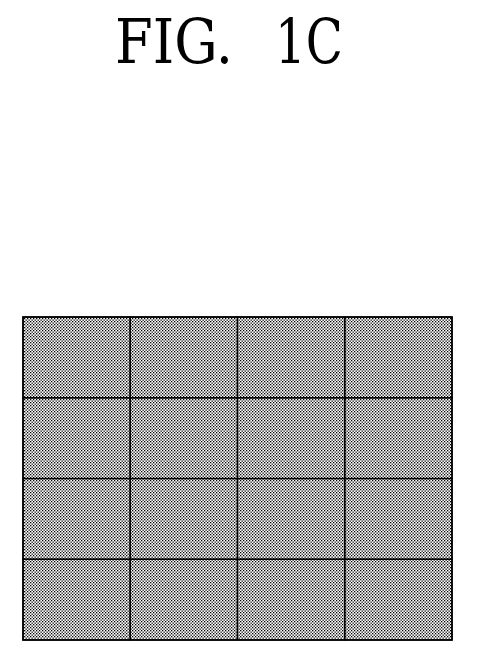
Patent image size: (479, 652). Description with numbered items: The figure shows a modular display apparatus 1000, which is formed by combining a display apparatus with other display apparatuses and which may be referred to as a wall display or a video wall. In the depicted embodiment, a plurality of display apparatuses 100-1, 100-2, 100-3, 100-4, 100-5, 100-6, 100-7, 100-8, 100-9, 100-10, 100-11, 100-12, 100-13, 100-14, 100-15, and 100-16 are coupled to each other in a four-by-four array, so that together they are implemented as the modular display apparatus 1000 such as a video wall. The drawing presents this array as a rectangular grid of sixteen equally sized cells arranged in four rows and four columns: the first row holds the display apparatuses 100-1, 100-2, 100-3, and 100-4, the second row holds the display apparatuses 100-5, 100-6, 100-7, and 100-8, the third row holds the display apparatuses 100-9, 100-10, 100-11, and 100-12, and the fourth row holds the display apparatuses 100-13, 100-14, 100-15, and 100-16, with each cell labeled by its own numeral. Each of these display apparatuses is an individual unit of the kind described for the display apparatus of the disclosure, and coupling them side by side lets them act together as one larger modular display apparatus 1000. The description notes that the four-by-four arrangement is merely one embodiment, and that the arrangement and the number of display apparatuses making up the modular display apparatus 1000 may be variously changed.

The modular display apparatus 1000 is at (203, 277).
The display apparatus 100-1 is at (106, 386).
The display apparatus 100-2 is at (213, 386).
The display apparatus 100-3 is at (266, 386).
The display apparatus 100-4 is at (373, 386).
The display apparatus 100-5 is at (106, 467).
The display apparatus 100-6 is at (213, 467).
The display apparatus 100-7 is at (266, 467).
The display apparatus 100-8 is at (373, 467).
The display apparatus 100-9 is at (106, 548).
The display apparatus 100-10 is at (152, 548).
The display apparatus 100-11 is at (327, 548).
The display apparatus 100-12 is at (434, 548).
The display apparatus 100-13 is at (45, 628).
The display apparatus 100-14 is at (152, 628).
The display apparatus 100-15 is at (327, 628).
The display apparatus 100-16 is at (434, 628).